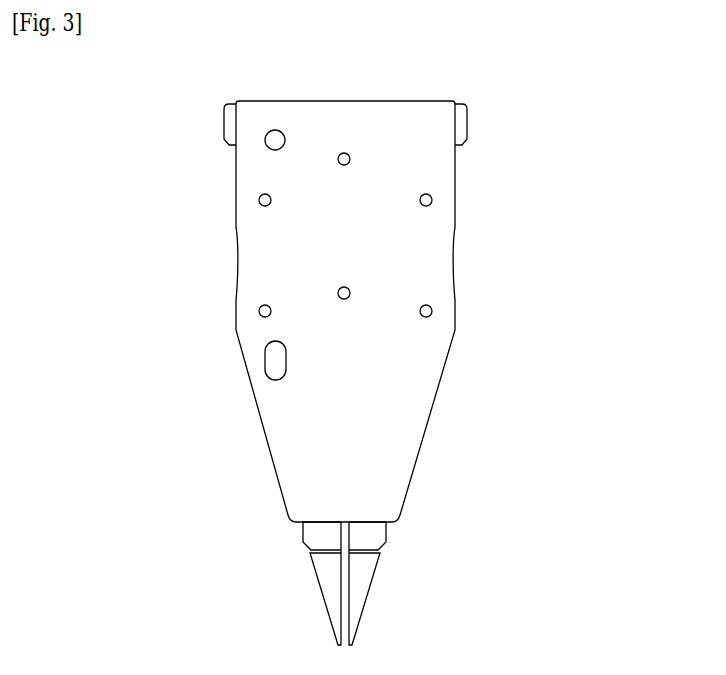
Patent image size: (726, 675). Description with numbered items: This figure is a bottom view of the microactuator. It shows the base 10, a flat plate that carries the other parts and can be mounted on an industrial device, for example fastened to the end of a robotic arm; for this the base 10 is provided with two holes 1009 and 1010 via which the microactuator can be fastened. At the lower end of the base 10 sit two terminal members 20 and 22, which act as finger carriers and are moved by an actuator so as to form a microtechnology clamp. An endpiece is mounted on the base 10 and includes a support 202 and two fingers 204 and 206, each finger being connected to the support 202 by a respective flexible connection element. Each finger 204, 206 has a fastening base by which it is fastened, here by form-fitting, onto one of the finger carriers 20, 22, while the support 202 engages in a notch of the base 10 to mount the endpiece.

The base 10 is at (457, 207).
The support 202 is at (222, 125).
The hole 1009 is at (333, 159).
The hole 1010 is at (333, 291).
The terminal member 20 is at (303, 542).
The terminal member 22 is at (388, 532).
The finger 204 is at (322, 608).
The finger 206 is at (377, 578).